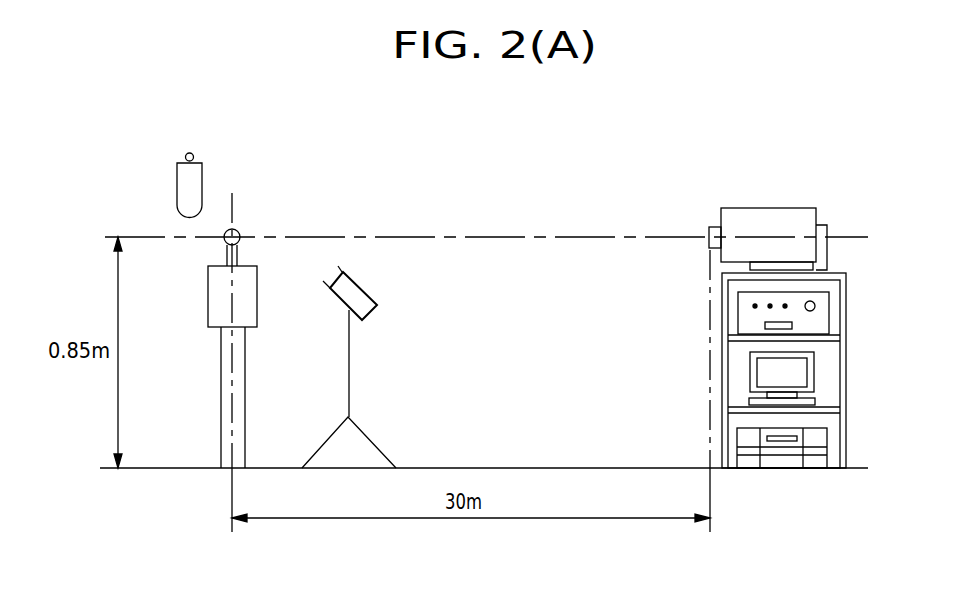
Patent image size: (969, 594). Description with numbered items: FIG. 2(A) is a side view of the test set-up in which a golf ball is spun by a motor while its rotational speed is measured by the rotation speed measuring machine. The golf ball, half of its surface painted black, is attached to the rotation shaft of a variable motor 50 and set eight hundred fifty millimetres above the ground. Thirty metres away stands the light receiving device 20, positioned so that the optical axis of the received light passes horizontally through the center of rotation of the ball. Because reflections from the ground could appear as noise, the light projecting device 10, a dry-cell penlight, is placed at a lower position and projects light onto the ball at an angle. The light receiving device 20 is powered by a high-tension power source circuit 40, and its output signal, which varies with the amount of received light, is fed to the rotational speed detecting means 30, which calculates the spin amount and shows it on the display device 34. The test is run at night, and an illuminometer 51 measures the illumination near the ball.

The light projecting device 10 is at (368, 289).
The light receiving device 20 is at (760, 207).
The rotational speed detecting means 30 is at (820, 440).
The display device 34 is at (815, 378).
The high-tension power source circuit 40 is at (829, 308).
The variable motor 50 is at (257, 315).
The illuminometer 51 is at (202, 190).